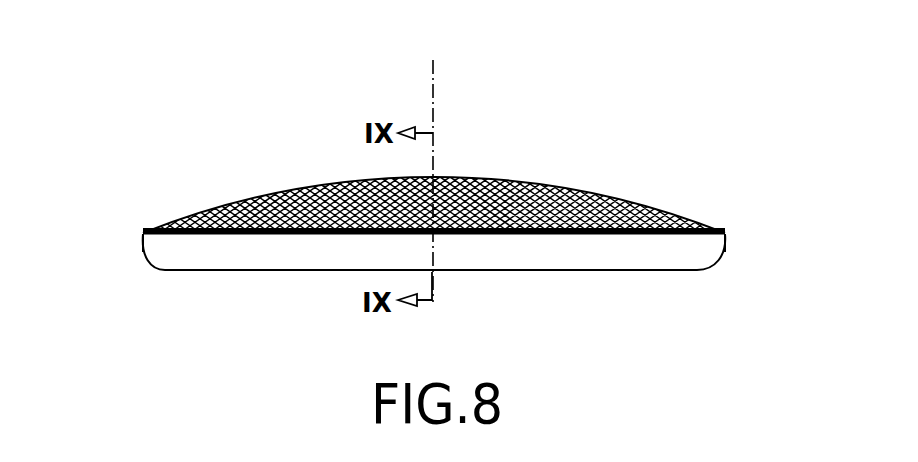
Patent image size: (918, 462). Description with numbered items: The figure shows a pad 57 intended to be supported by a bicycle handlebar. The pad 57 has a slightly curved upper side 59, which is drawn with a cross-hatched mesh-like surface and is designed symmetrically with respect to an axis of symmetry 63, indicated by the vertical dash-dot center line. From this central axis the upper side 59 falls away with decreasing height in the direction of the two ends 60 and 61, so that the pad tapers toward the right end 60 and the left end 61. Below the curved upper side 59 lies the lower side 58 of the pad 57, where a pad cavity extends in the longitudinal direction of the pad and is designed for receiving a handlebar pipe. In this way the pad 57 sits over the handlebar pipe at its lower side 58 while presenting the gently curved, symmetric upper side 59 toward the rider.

The pad 57 is at (448, 184).
The lower side 58 is at (633, 243).
The upper side 59 is at (345, 179).
The end 60 is at (728, 243).
The end 61 is at (139, 236).
The axis of symmetry 63 is at (435, 113).